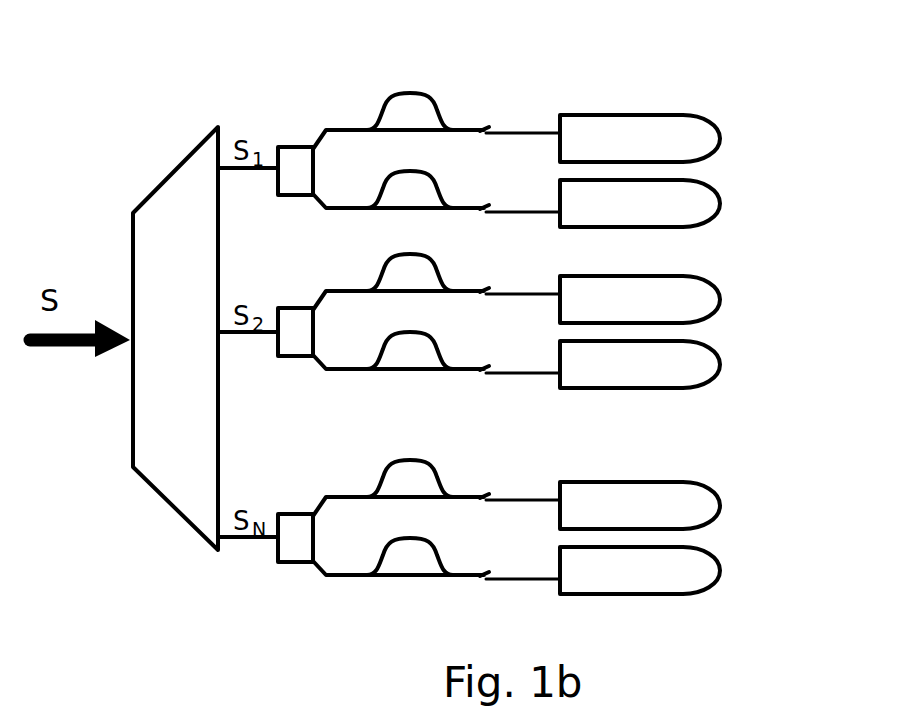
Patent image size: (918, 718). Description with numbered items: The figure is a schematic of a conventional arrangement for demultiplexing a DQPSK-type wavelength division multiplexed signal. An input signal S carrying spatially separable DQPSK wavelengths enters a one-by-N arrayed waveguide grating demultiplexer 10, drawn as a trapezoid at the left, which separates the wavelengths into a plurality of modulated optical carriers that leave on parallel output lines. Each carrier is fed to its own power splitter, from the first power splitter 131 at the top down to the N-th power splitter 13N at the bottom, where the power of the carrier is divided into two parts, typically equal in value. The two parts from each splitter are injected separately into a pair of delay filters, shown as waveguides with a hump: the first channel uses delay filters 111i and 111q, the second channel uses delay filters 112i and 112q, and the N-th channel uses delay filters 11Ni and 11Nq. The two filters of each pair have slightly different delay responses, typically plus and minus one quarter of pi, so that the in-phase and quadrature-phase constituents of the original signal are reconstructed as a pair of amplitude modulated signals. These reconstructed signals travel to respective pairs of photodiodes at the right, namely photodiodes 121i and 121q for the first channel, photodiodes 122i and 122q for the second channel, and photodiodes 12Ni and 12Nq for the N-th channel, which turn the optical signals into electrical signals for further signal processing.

The AWG demultiplexer 10 is at (160, 171).
The power splitter 131 is at (276, 145).
The power splitter 13N is at (282, 566).
The delay filter 111i is at (411, 88).
The delay filter 111q is at (362, 176).
The delay filter 112i is at (455, 273).
The delay filter 112q is at (362, 338).
The delay filter 11Ni is at (456, 481).
The delay filter 11Nq is at (365, 546).
The photodiode 121i is at (724, 130).
The photodiode 121q is at (724, 197).
The photodiode 122i is at (724, 292).
The photodiode 122q is at (724, 358).
The photodiode 12Ni is at (724, 498).
The photodiode 12Nq is at (724, 563).